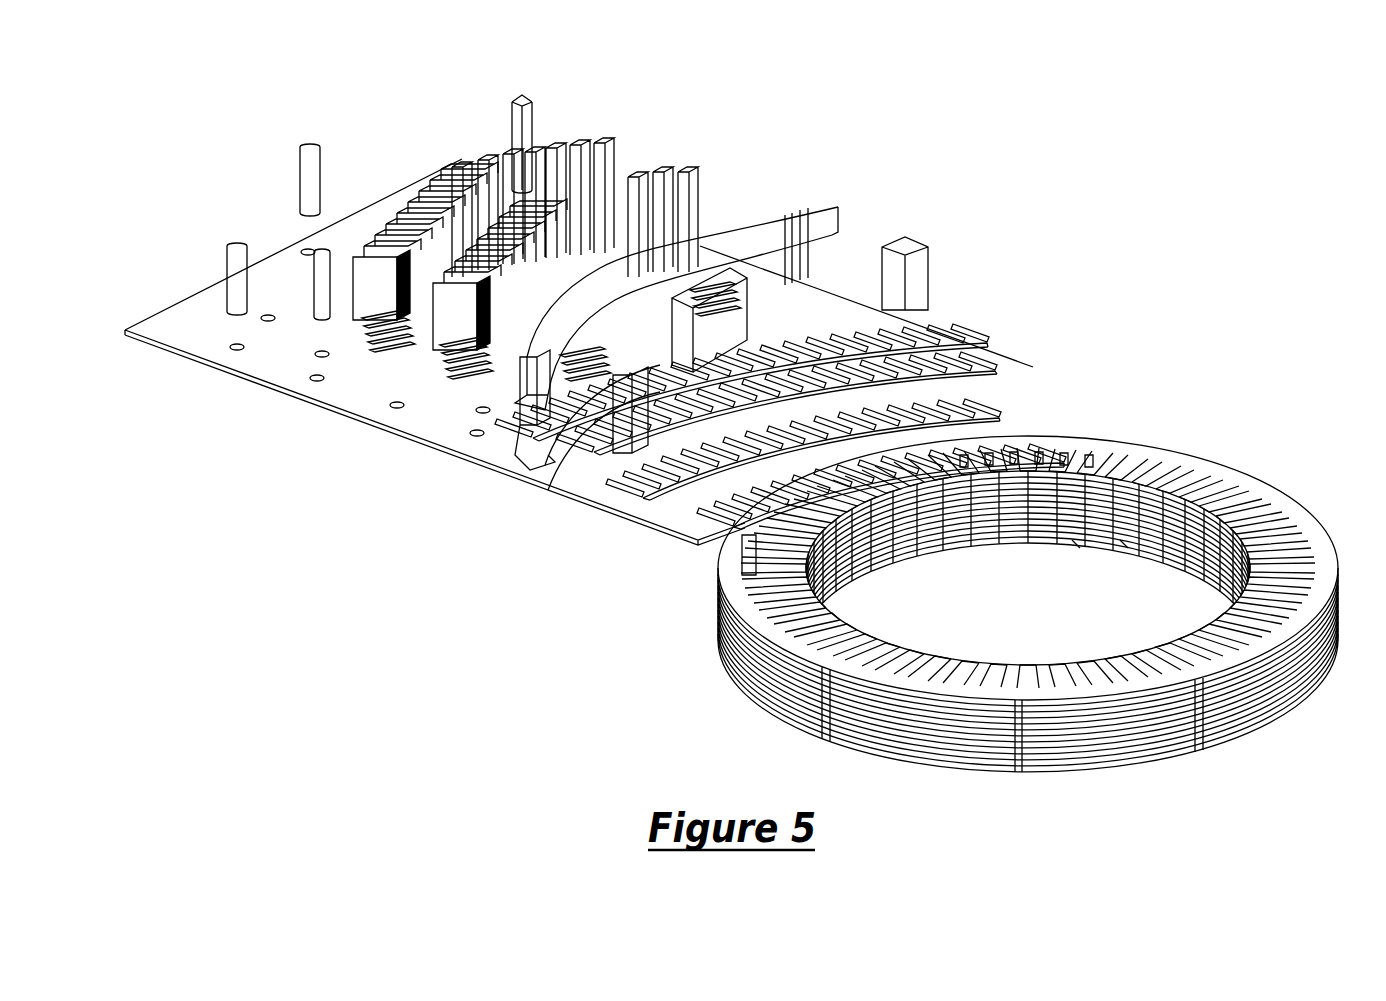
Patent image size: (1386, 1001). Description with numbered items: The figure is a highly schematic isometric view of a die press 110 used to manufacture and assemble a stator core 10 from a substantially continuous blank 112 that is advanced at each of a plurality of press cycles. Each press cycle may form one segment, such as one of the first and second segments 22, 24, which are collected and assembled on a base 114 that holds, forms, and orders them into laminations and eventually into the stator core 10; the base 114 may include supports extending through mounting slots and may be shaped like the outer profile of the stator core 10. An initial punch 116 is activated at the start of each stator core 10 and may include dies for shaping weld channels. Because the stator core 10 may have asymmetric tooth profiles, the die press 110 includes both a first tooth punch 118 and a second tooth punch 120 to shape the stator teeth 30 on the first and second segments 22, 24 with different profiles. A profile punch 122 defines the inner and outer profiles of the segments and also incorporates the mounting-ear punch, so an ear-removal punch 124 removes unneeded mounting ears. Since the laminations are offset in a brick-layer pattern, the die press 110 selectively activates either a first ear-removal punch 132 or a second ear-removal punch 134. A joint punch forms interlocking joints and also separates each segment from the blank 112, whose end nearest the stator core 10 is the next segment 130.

The stator core 10 is at (1245, 400).
The first segment 22 is at (990, 442).
The second segment 24 is at (1158, 442).
The stator teeth 30 is at (1132, 545).
The die press 110 is at (325, 728).
The blank 112 is at (367, 215).
The base 114 is at (1228, 748).
The initial punch 116 is at (548, 100).
The first tooth punch 118 is at (620, 148).
The second tooth punch 120 is at (695, 186).
The profile punch 122 is at (838, 207).
The ear-removal punch 124 is at (950, 265).
The next segment 130 is at (980, 388).
The first ear-removal punch 132 is at (905, 240).
The second ear-removal punch 134 is at (740, 275).